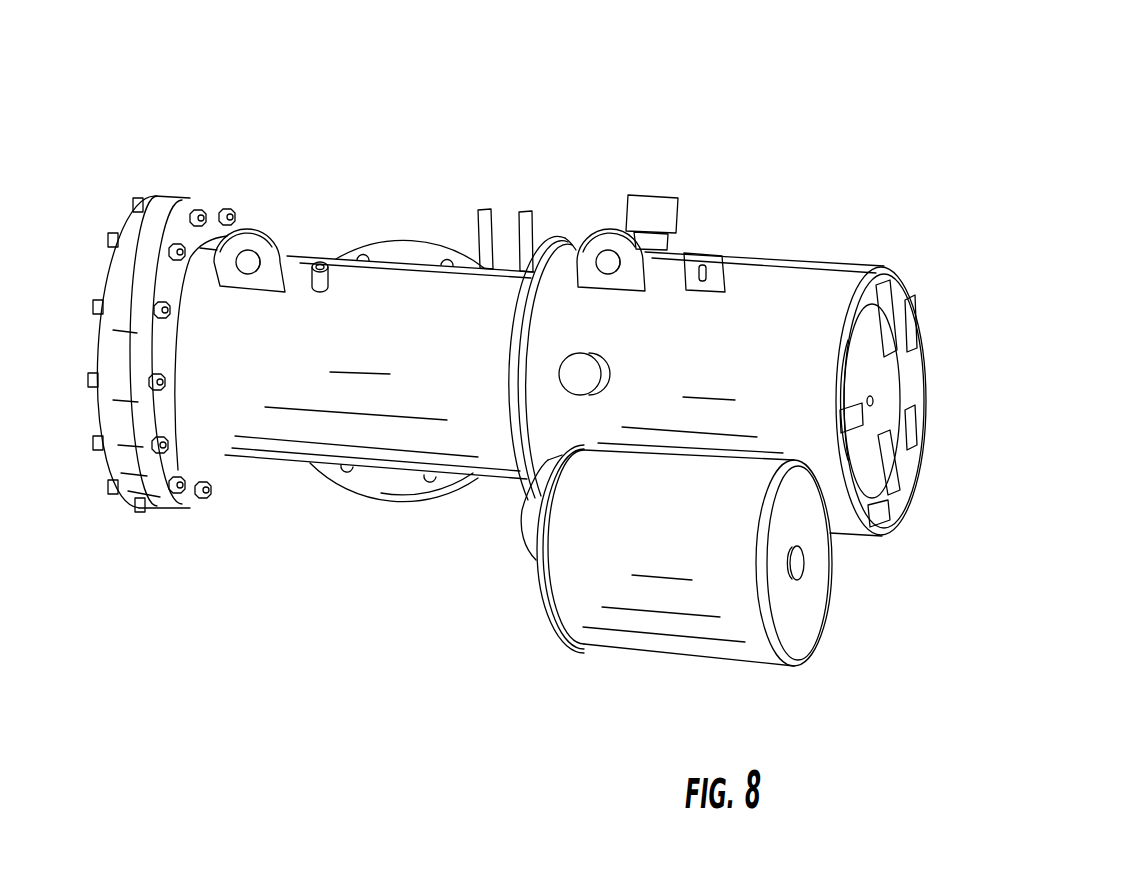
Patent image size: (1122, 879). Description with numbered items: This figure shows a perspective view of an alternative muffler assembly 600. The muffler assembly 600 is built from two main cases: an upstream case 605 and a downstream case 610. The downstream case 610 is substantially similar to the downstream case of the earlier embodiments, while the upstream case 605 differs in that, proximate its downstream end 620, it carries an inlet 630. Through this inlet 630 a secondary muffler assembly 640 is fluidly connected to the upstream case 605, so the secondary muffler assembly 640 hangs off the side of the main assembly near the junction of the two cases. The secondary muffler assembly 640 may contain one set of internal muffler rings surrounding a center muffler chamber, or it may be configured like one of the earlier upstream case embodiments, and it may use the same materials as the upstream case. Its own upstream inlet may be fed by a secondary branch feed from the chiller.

The muffler assembly 600 is at (838, 142).
The upstream case 605 is at (915, 283).
The downstream case 610 is at (400, 203).
The downstream end 620 is at (618, 183).
The inlet 630 is at (490, 545).
The secondary muffler assembly 640 is at (567, 683).